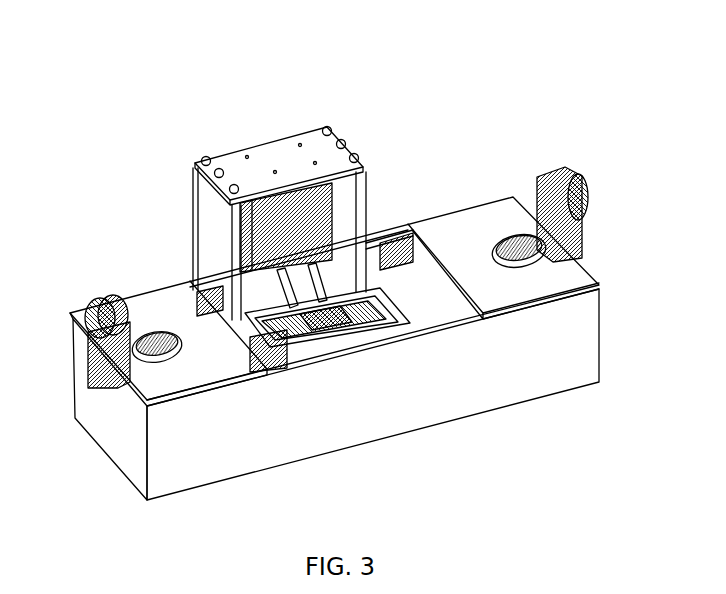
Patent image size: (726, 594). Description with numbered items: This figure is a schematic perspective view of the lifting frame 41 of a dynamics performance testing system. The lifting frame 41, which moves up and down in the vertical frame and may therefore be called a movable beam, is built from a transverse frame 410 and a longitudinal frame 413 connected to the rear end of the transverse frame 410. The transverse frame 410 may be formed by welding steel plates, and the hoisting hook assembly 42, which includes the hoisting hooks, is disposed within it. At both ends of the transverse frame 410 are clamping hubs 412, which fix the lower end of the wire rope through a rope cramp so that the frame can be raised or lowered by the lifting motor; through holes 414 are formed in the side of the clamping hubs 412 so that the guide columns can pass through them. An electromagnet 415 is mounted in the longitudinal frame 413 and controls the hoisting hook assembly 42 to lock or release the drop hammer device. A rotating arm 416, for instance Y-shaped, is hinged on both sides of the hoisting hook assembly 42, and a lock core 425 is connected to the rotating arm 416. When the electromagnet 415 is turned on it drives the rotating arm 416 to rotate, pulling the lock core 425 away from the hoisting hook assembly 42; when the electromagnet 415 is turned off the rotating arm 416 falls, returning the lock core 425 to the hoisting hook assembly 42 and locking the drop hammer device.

The lifting frame 41 is at (415, 134).
The transverse frame 410 is at (372, 403).
The clamping hub 412 is at (92, 307).
The longitudinal frame 413 is at (292, 133).
The through hole 414 is at (163, 340).
The electromagnet 415 is at (318, 225).
The rotating arm 416 is at (390, 302).
The hoisting hook assembly 42 is at (330, 353).
The lock core 425 is at (330, 326).